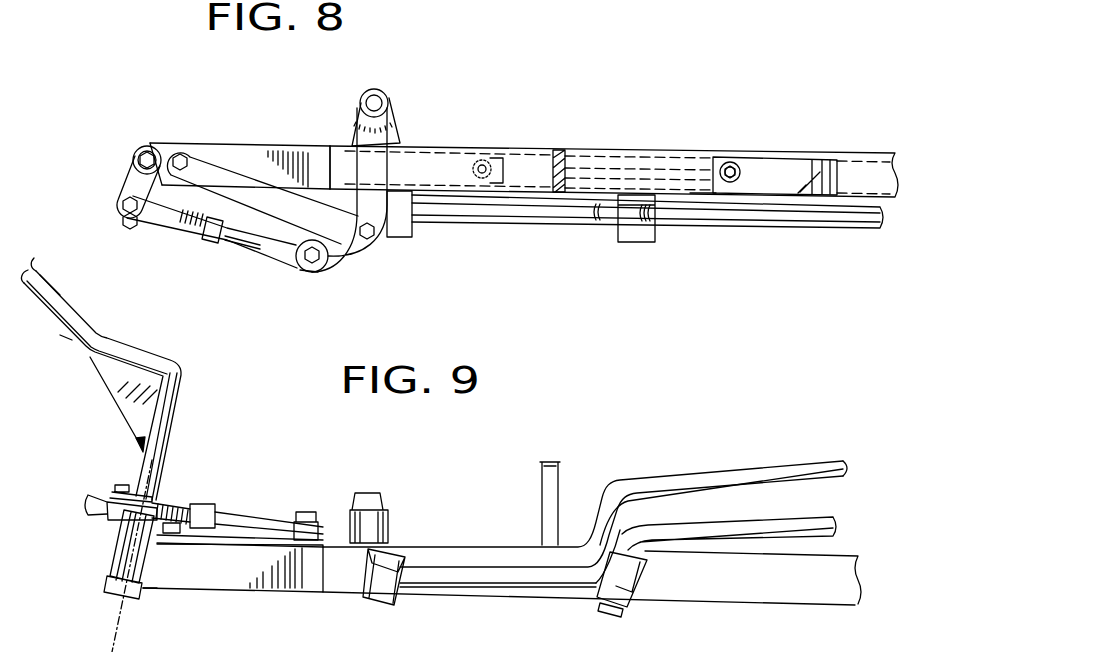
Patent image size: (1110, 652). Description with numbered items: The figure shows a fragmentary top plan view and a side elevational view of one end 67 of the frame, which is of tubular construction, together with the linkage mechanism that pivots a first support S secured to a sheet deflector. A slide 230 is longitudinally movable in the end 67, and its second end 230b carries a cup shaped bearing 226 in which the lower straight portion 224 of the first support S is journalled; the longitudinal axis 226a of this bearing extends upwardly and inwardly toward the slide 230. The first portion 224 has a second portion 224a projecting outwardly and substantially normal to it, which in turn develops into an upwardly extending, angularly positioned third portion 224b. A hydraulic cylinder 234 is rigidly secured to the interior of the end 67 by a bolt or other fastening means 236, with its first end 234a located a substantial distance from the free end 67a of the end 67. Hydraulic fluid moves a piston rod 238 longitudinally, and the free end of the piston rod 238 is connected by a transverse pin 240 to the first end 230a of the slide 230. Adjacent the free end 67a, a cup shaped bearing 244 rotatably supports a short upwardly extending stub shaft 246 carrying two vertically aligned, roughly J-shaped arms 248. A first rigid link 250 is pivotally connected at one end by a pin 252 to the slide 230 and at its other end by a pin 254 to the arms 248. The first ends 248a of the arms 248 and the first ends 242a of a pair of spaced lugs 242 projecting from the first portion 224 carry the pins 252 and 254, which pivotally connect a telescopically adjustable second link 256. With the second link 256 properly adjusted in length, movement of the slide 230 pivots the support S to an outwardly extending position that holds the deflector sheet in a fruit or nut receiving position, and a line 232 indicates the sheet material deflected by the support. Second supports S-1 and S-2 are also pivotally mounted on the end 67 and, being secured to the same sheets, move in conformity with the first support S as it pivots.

In FIG. 8, the end 67 is at (619, 150).
In FIG. 9, the end 67 is at (460, 545).
In FIG. 8, the free end of the end 67a is at (328, 142).
In FIG. 9, the free end of the end 67a is at (322, 592).
In FIG. 9, the lower straight portion 224 is at (172, 437).
In FIG. 9, the second portion 224a is at (118, 368).
In FIG. 9, the third portion 224b is at (64, 277).
In FIG. 8, the cup shaped bearing 226 is at (134, 147).
In FIG. 9, the cup shaped bearing 226 is at (120, 545).
In FIG. 9, the longitudinal axis 226a is at (118, 628).
In FIG. 8, the slide 230 is at (264, 145).
In FIG. 9, the slide 230 is at (224, 588).
In FIG. 8, the first end of the slide 230a is at (557, 149).
In FIG. 8, the second end of the slide 230b is at (158, 144).
In FIG. 9, the second end of the slide 230b is at (152, 588).
In FIG. 9, the seed flow line 232 is at (134, 420).
In FIG. 8, the hydraulic cylinder 234 is at (808, 152).
In FIG. 8, the first end of the hydraulic cylinder 234a is at (706, 196).
In FIG. 8, the bolt or other fastening means 236 is at (734, 164).
In FIG. 8, the piston rod 238 is at (627, 172).
In FIG. 8, the transverse pin 240 is at (483, 166).
In FIG. 8, the spaced lugs 242 is at (124, 172).
In FIG. 9, the spaced lugs 242 is at (108, 502).
In FIG. 8, the first ends of lugs 242a is at (122, 210).
In FIG. 8, the cup shaped bearing 244 is at (400, 130).
In FIG. 8, the stub shaft 246 is at (378, 102).
In FIG. 9, the stub shaft 246 is at (372, 505).
In FIG. 8, the arms 248 is at (364, 270).
In FIG. 8, the first ends of the arms 248a is at (316, 273).
In FIG. 8, the first rigid link 250 is at (242, 191).
In FIG. 8, the pin 252 is at (186, 152).
In FIG. 8, the pin 254 is at (132, 218).
In FIG. 8, the telescopically adjustable second link 256 is at (228, 244).
In FIG. 9, the first support S is at (60, 336).
In FIG. 9, the second support S-1 is at (695, 476).
In FIG. 9, the second support S-2 is at (730, 533).